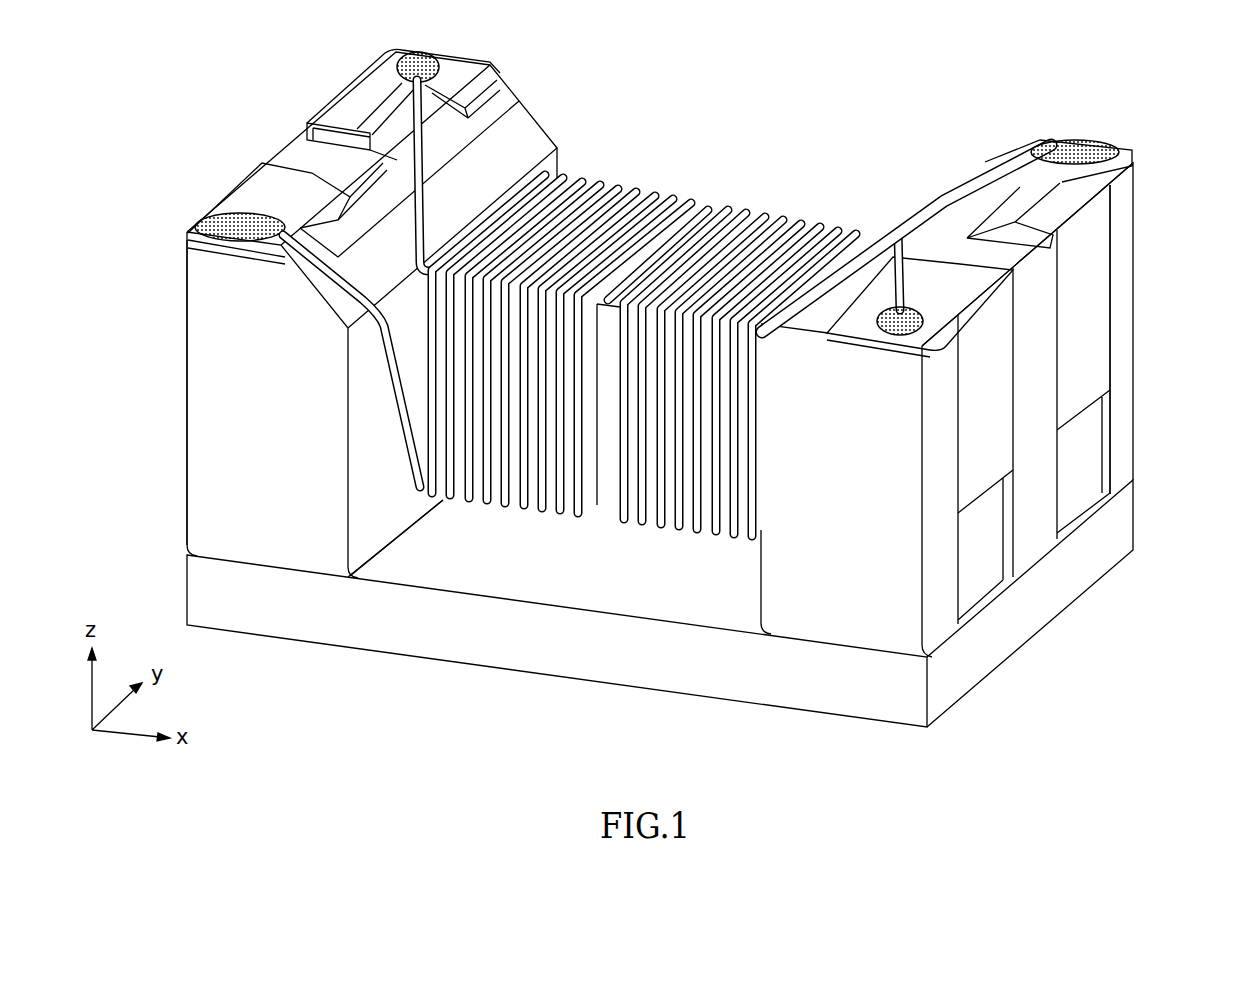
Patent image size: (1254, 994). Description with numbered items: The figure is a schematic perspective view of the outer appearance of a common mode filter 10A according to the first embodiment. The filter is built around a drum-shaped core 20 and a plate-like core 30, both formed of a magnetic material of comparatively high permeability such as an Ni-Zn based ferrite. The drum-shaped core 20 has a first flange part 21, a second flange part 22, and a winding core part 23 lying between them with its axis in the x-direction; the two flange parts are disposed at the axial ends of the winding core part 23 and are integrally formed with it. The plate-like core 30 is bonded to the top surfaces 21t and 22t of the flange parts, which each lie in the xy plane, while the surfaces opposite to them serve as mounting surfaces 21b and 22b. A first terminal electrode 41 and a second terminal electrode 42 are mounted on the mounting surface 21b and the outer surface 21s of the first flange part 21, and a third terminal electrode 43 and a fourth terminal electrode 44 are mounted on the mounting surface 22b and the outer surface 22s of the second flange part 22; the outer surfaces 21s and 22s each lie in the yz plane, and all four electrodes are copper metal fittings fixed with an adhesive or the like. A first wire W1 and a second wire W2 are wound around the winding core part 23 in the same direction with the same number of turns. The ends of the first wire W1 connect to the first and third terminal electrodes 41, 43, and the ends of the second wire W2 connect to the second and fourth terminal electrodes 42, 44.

The common mode filter 10A is at (1162, 63).
The drum-shaped core 20 is at (752, 152).
The first flange part 21 is at (1128, 327).
The mounting surface 21b is at (1028, 258).
The outer surface 21s is at (1127, 430).
The top surface 21t is at (1028, 543).
The second flange part 22 is at (184, 424).
The mounting surface 22b is at (310, 162).
The outer surface 22s is at (217, 482).
The top surface 22t is at (418, 518).
The winding core part 23 is at (715, 210).
The plate-like core 30 is at (856, 695).
The first terminal electrode 41 is at (967, 280).
The second terminal electrode 42 is at (1005, 178).
The third terminal electrode 43 is at (250, 188).
The fourth terminal electrode 44 is at (360, 93).
The first wire W1 is at (330, 272).
The second wire W2 is at (434, 197).